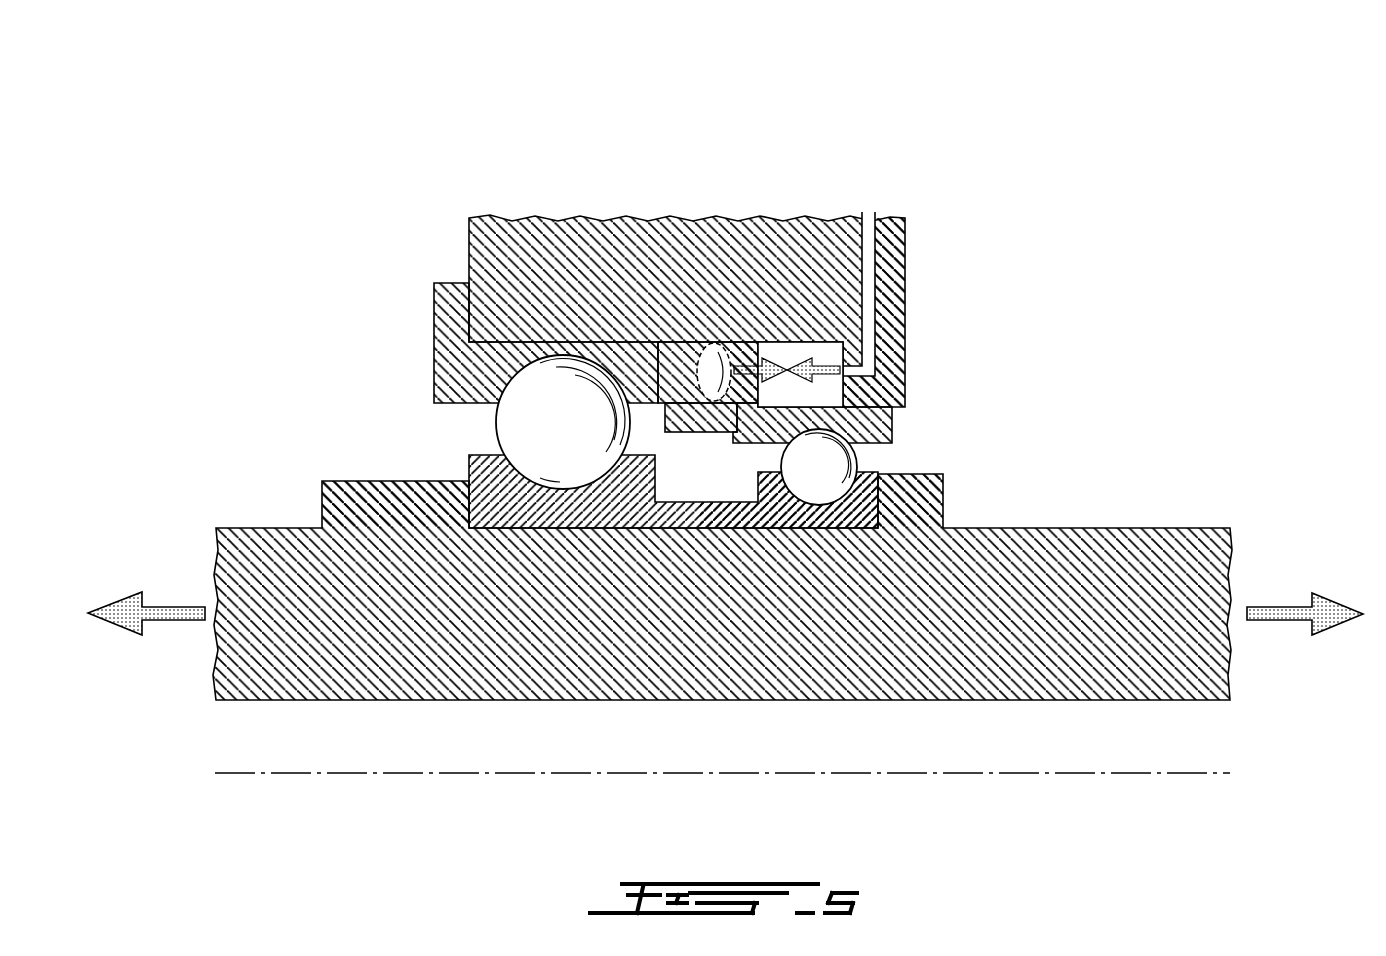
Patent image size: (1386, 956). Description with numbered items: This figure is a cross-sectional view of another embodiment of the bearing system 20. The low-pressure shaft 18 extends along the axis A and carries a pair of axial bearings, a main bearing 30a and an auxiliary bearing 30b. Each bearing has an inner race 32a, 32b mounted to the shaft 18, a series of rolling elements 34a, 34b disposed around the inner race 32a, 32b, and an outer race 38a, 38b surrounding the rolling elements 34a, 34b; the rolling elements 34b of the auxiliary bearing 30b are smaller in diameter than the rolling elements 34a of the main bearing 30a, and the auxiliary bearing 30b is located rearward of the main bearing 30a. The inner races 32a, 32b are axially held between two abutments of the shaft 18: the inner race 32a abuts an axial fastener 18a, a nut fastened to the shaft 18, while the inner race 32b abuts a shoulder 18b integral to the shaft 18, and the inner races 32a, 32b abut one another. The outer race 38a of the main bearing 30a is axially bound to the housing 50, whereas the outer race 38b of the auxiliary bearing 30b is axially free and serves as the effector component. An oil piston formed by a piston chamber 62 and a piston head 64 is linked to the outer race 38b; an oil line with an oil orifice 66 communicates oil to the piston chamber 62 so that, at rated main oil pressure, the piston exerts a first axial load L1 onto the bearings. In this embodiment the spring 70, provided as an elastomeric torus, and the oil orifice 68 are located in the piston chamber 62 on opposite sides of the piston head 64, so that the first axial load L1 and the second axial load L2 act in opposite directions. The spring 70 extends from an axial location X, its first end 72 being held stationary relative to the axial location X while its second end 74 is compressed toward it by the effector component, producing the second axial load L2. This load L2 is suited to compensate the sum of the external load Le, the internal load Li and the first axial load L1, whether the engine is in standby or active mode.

The low-pressure shaft 18 is at (993, 688).
The axial fastener 18a is at (333, 483).
The shoulder 18b is at (937, 487).
The bearing system 20 is at (284, 154).
The main bearing 30a is at (343, 394).
The auxiliary bearing 30b is at (919, 407).
The inner race 32a is at (473, 480).
The inner race 32b is at (860, 512).
The rolling elements 34a is at (498, 422).
The rolling elements 34b is at (833, 463).
The outer race 38a is at (450, 378).
The outer race 38b is at (882, 425).
The housing 50 is at (587, 250).
The piston chamber 62 is at (800, 357).
The piston head 64 is at (748, 357).
The oil orifice 66 is at (884, 305).
The oil orifice 68 is at (865, 220).
The spring 70 is at (714, 372).
The first end 72 is at (660, 360).
The second end 74 is at (749, 378).
The axial location X is at (706, 357).
The first axial load L1 is at (836, 370).
The second axial load L2 is at (758, 370).
The external load Le is at (168, 607).
The internal load Li is at (1277, 610).
The axis A is at (355, 776).